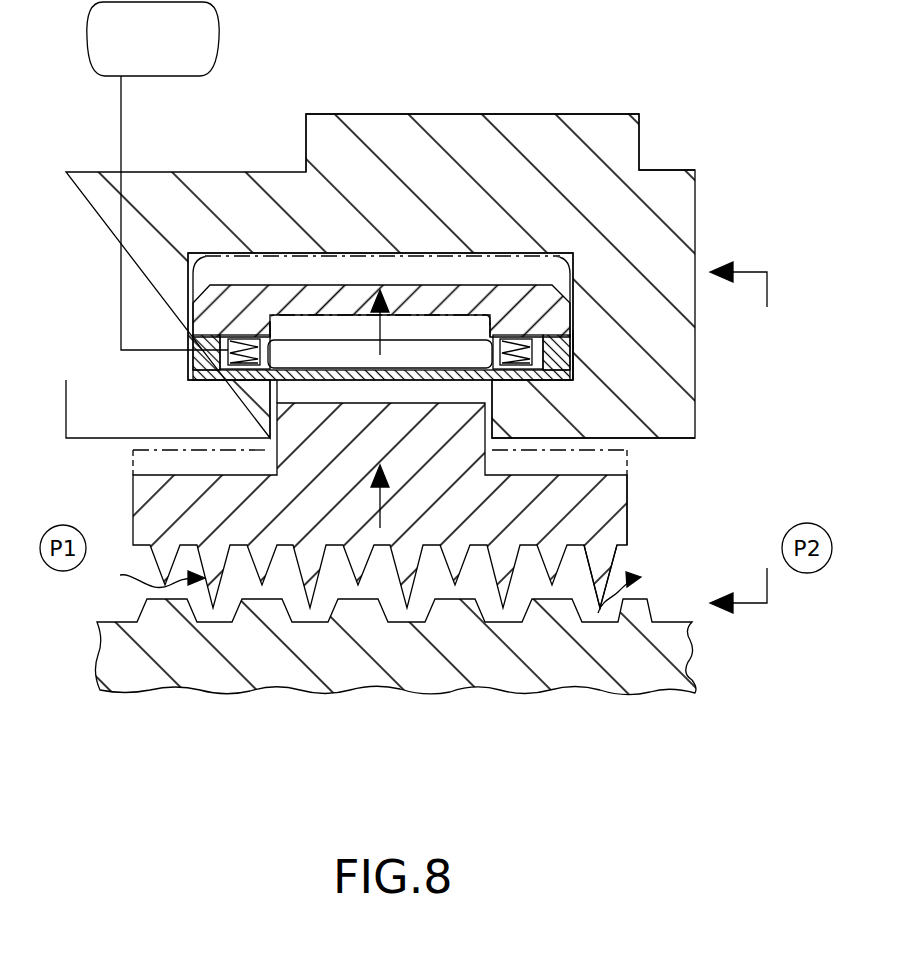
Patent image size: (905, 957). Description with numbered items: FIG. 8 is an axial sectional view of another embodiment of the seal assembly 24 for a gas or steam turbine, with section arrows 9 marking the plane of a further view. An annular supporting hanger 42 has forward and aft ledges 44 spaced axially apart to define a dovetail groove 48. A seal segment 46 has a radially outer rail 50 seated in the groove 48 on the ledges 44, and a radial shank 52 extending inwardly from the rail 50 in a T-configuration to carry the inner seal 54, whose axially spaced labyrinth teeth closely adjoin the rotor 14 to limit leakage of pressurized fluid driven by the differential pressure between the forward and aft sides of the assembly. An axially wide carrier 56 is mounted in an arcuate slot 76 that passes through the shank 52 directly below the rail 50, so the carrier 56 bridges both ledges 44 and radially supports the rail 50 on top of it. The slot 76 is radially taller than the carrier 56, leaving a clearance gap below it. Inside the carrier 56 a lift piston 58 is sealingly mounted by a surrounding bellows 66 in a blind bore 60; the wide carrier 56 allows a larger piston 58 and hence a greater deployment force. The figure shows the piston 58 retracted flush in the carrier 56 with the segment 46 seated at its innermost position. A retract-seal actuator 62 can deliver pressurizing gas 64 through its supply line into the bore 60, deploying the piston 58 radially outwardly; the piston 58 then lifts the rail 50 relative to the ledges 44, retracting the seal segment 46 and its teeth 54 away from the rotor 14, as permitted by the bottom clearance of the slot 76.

The rotor 14 is at (423, 668).
The seal assembly 24 is at (690, 150).
The supporting hanger 42 is at (581, 169).
The ledge 44 is at (233, 412).
The seal segment 46 is at (643, 486).
The dovetail groove 48 is at (360, 284).
The rail 50 is at (495, 287).
The shank 52 is at (313, 487).
The inner seal 54 is at (590, 581).
The carrier 56 is at (571, 358).
The piston 58 is at (413, 340).
The bore 60 is at (434, 356).
The actuator 62 is at (221, 43).
The pressurizing gas 64 is at (122, 130).
The bellows 66 is at (243, 340).
The slot 76 is at (343, 390).
The section line 9 is at (738, 437).